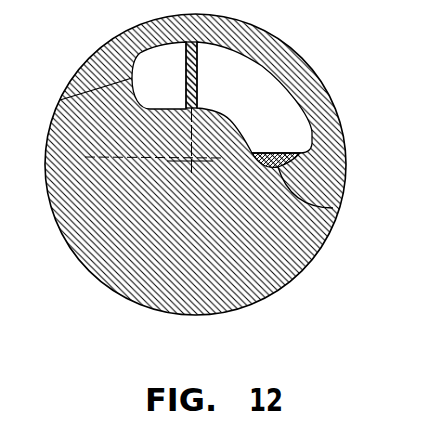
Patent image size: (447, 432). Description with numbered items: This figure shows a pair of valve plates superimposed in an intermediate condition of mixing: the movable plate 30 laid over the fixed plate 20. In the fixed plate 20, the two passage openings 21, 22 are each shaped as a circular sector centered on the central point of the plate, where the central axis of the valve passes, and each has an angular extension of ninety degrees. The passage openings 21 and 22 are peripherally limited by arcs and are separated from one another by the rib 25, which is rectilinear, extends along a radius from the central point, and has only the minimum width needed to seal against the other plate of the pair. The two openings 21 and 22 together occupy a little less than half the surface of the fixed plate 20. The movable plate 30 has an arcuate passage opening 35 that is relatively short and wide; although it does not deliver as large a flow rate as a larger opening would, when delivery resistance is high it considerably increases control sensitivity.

The fixed plate 20 is at (333, 208).
The passage opening 21 is at (60, 100).
The passage opening 22 is at (243, 80).
The rib 25 is at (122, 35).
The movable plate 30 is at (118, 236).
The passage opening 35 is at (292, 93).